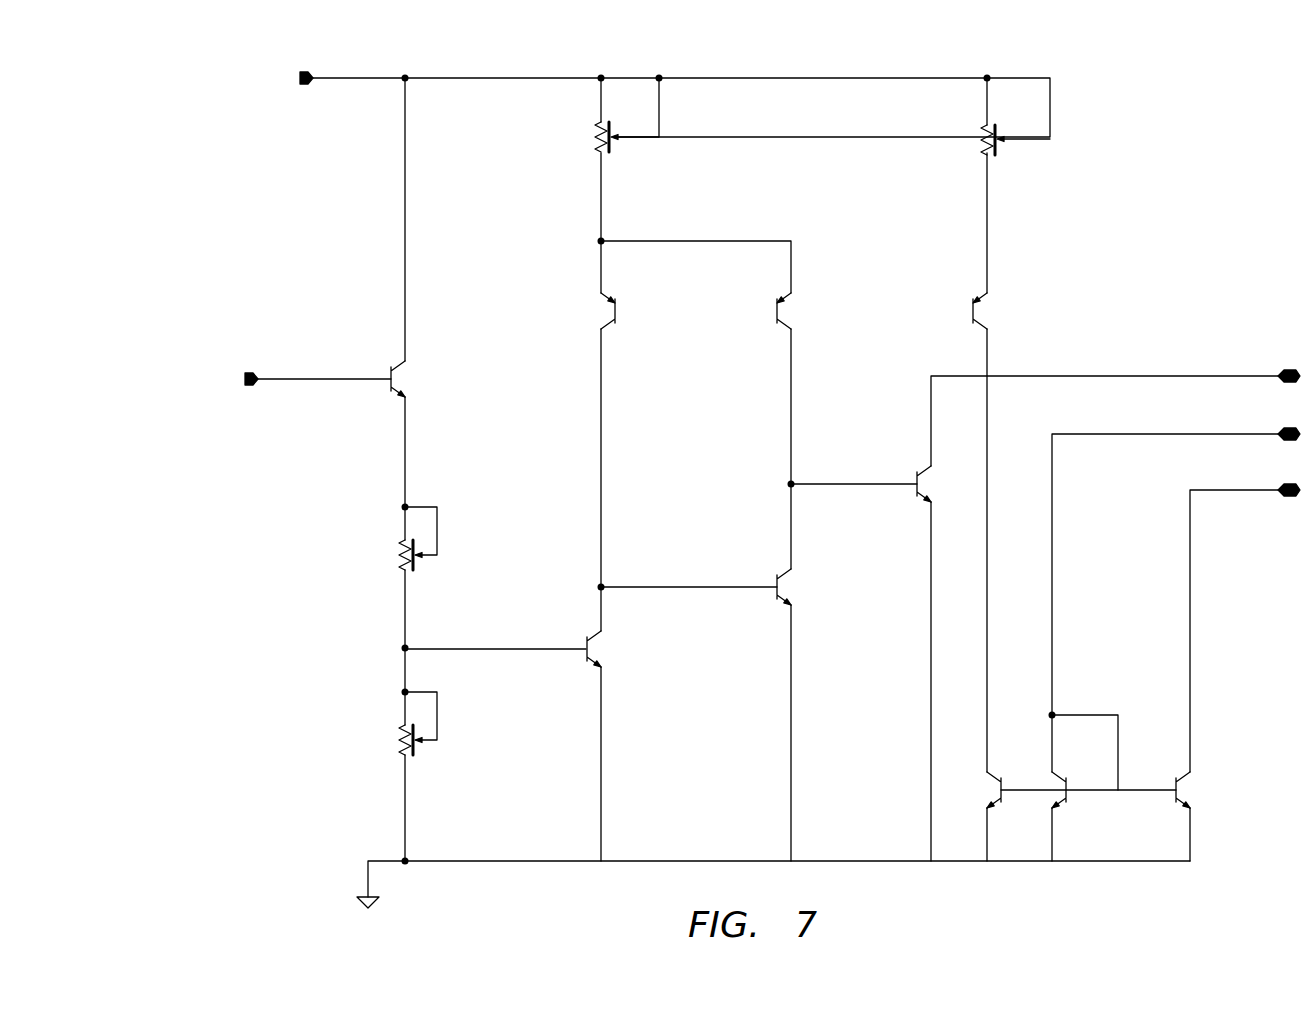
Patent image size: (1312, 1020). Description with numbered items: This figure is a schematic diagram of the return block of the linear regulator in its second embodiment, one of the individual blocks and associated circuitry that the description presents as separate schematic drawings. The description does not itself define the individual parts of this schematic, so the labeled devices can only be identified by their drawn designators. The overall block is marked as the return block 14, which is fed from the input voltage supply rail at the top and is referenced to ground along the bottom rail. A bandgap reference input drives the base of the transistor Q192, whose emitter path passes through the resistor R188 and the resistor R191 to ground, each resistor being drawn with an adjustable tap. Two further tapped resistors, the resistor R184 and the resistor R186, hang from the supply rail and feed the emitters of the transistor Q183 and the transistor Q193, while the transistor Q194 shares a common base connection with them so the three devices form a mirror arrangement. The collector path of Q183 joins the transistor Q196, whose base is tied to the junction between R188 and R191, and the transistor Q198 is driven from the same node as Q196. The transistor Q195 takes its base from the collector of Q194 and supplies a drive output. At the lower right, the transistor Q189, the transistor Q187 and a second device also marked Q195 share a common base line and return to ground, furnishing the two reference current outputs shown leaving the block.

The current reference / bias circuit 14 is at (492, 65).
The transistor Q192 is at (376, 369).
The resistor R184 is at (603, 115).
The resistor R186 is at (993, 140).
The resistor R188 is at (387, 555).
The resistor R191 is at (387, 740).
The transistor Q183 is at (624, 299).
The transistor Q194 is at (765, 299).
The transistor Q193 is at (966, 299).
The transistor Q196 is at (577, 634).
The transistor Q198 is at (769, 575).
The transistor Q195 is at (1039, 624).
The transistor Q189 is at (1009, 778).
The transistor Q187 is at (1076, 778).